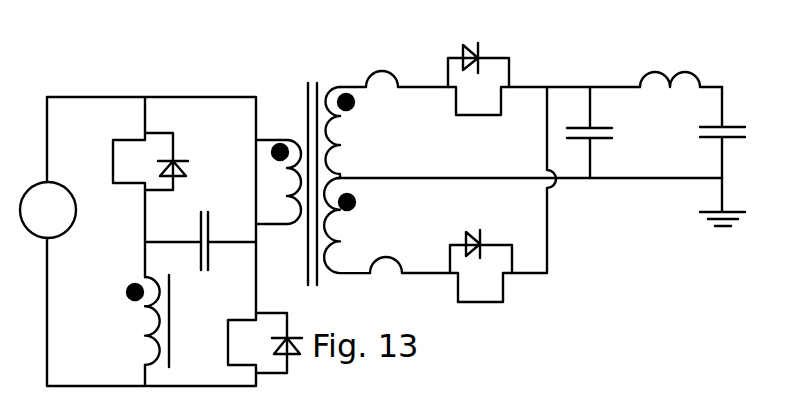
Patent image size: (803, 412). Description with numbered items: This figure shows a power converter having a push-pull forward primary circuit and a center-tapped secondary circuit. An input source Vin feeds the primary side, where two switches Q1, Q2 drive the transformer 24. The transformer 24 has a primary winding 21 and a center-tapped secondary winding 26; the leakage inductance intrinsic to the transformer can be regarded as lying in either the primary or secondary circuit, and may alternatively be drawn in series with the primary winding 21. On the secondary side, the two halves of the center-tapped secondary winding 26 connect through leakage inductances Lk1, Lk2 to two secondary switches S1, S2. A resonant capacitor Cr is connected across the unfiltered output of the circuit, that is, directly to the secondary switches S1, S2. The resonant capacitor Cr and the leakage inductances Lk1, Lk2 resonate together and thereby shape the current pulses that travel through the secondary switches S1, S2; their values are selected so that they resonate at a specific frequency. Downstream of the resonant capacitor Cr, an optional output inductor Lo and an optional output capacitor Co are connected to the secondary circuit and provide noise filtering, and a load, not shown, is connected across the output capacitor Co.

The primary winding 21 is at (290, 195).
The transformer 24 is at (307, 115).
The center-tapped secondary winding 26 is at (338, 175).
The input voltage source Vin is at (48, 210).
The switch Q1 is at (150, 161).
The switch Q2 is at (265, 343).
The secondary switch S1 is at (478, 79).
The secondary switch S2 is at (481, 266).
The leakage inductance Lk1 is at (381, 73).
The leakage inductance Lk2 is at (383, 257).
The resonant capacitor Cr is at (607, 127).
The output inductor Lo is at (650, 70).
The output capacitor Co is at (740, 122).